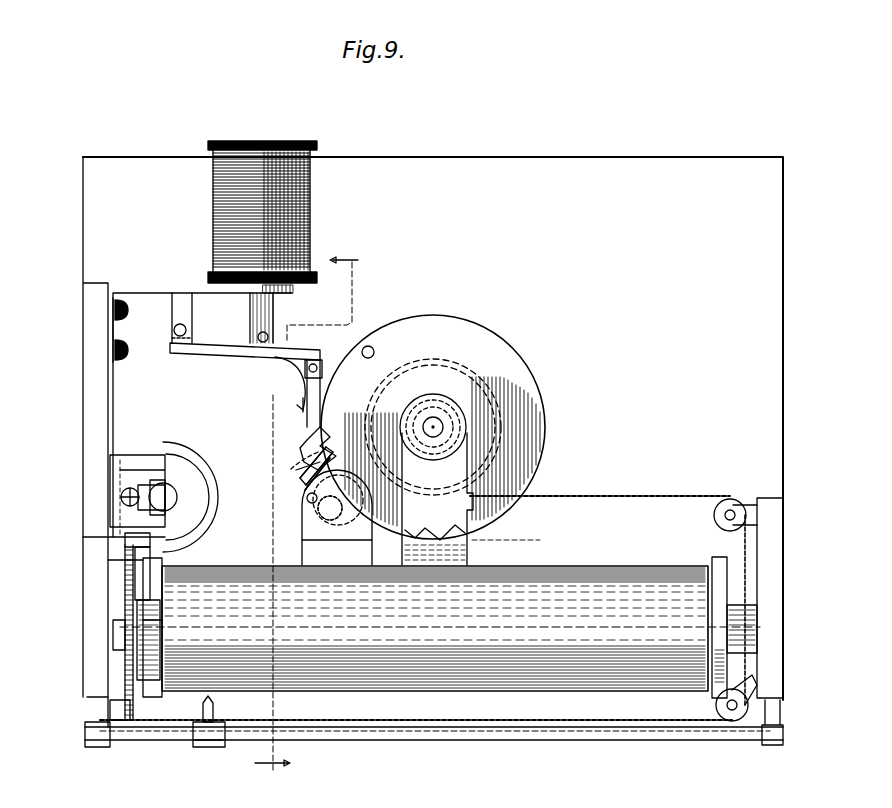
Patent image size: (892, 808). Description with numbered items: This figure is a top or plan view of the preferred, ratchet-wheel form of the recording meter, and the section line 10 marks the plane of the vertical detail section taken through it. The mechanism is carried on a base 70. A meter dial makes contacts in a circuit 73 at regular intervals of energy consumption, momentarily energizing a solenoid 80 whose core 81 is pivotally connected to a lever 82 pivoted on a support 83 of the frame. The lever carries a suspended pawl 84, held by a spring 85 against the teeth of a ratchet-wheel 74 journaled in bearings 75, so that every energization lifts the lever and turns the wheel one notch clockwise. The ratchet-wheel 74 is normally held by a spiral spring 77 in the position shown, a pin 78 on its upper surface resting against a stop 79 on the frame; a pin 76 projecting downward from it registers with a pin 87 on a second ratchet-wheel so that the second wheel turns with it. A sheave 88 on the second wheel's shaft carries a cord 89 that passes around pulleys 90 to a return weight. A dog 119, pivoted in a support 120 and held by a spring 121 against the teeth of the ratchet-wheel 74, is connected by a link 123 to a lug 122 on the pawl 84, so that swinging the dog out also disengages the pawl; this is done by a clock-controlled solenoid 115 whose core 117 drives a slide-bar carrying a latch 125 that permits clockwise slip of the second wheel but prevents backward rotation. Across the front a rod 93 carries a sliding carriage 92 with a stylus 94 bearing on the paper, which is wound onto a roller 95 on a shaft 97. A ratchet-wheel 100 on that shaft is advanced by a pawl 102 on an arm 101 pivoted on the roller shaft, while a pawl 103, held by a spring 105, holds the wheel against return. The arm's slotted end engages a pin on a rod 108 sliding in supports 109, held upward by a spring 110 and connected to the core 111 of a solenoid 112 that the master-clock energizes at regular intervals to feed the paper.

The section line 10— 10 is at (306, 511).
The base 70 is at (783, 490).
The circuit 73 is at (140, 157).
The ratchet-wheel 74 is at (475, 332).
The bearings 75 is at (455, 466).
The pin 76 is at (366, 346).
The spiral spring 77 is at (433, 396).
The pin 78 is at (445, 512).
The stop 79 is at (488, 530).
The solenoid 80 is at (272, 165).
The core 81 is at (258, 320).
The lever 82 is at (205, 354).
The pivotal support 83 is at (178, 332).
The pawl 84 is at (300, 409).
The spring 85 is at (302, 383).
The pin 87 is at (402, 357).
The sheave 88 is at (478, 374).
The cord 89 is at (640, 496).
The pulleys 90 is at (732, 500).
The carriage 92 is at (207, 747).
The rod 93 is at (440, 740).
The stylus 94 is at (214, 710).
The roller 95 is at (712, 615).
The shaft 97 is at (758, 632).
The ratchet-wheel 100 is at (125, 588).
The arm 101 is at (165, 620).
The pawl 102 is at (137, 562).
The pawl 103 is at (112, 710).
The spring 105 is at (128, 540).
The rod 108 is at (137, 490).
The supports 109 is at (185, 485).
The spring 110 is at (122, 497).
The core 111 is at (175, 484).
The solenoid 112 is at (152, 448).
The solenoid 115 is at (320, 528).
The core 117 is at (316, 515).
The dog 119 is at (318, 495).
The support 120 is at (320, 545).
The spring 121 is at (300, 480).
The lug 122 is at (300, 455).
The link 123 is at (305, 468).
The latch 125 is at (336, 506).